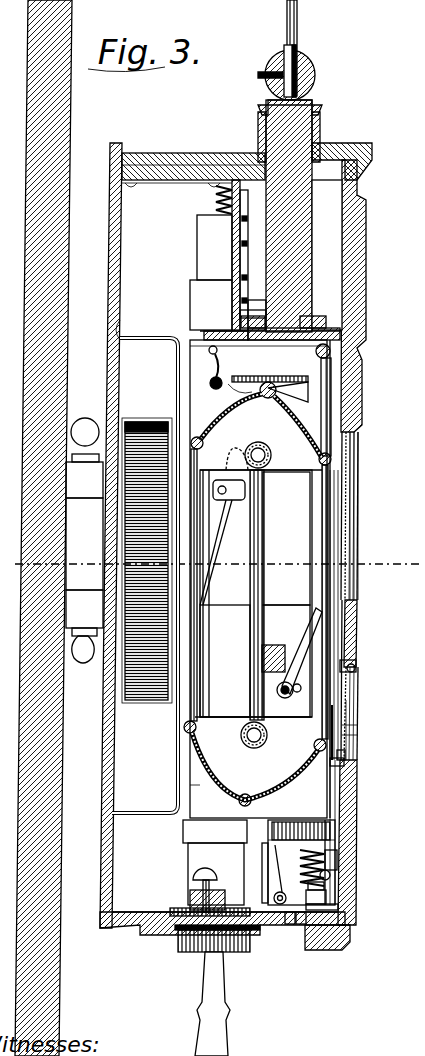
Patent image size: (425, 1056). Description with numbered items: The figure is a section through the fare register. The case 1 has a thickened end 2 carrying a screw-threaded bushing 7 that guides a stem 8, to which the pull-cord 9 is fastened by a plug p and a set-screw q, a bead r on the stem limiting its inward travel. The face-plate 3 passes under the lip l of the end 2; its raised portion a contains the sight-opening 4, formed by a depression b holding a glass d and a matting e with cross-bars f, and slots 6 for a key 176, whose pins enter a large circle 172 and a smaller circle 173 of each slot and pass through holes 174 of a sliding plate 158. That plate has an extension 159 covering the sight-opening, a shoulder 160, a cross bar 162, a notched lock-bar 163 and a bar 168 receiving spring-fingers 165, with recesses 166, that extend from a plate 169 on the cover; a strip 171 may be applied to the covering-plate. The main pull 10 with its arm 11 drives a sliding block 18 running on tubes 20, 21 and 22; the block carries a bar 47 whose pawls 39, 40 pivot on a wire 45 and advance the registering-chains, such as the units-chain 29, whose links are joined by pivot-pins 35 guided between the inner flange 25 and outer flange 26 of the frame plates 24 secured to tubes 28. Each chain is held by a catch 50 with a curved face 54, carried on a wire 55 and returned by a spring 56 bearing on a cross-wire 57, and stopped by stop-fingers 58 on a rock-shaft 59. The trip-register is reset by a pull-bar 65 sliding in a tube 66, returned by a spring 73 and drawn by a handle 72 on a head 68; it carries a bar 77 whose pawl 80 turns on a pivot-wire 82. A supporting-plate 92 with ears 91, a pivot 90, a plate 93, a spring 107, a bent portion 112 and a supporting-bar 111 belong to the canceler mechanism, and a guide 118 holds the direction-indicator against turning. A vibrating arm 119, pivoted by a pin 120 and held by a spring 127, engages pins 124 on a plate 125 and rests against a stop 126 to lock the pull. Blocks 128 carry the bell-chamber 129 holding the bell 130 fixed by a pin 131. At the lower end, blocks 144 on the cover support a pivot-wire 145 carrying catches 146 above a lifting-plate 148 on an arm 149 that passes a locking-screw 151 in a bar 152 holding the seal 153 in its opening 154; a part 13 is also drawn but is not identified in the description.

The case 1 is at (167, 153).
The end of case 2 is at (358, 144).
The face-plate 3 is at (364, 300).
The sight-opening 4 is at (353, 486).
The slots 6 is at (353, 727).
The bushing 7 is at (322, 133).
The stem 8 is at (289, 216).
The pull-cord 9 is at (296, 20).
The main pull 10 is at (330, 315).
The arm 11 is at (327, 255).
The contact block 13 is at (338, 856).
The sliding block 18 is at (286, 661).
The tube 20 is at (331, 372).
The tube 21 is at (244, 593).
The tube 22 is at (200, 678).
The plates 24 is at (260, 579).
The inner flange 25 is at (312, 511).
The outer flange 26 is at (190, 787).
The tube 28 is at (248, 595).
The units-chain 29 is at (300, 427).
The pivot-pin 35 is at (323, 355).
The pawl 39 is at (318, 641).
The pawl 40 is at (280, 681).
The wire or pivot 45 is at (285, 700).
The bar 47 is at (285, 648).
The catch 50 is at (270, 382).
The curved face 54 is at (255, 386).
The wire 55 is at (206, 381).
The spring 56 is at (236, 376).
The cross-wire 57 is at (205, 362).
The stop-finger 58 is at (326, 394).
The rock-shaft 59 is at (331, 353).
The pull-bar 65 is at (216, 560).
The shell or tube 66 is at (215, 561).
The head 68 is at (240, 952).
The handle 72 is at (215, 1036).
The spring 73 is at (215, 205).
The bar 77 is at (226, 506).
The pawl 80 is at (213, 560).
The pivot-wire 82 is at (230, 491).
The pivot 90 is at (290, 926).
The ears 91 is at (274, 899).
The supporting-plate 92 is at (268, 862).
The plate 93 is at (339, 907).
The spring 107 is at (283, 838).
The supporting-bar 111 is at (352, 826).
The bent portion 112 is at (338, 950).
The guide 118 is at (84, 458).
The vibrating arm 119 is at (240, 312).
The pin or pivot 120 is at (240, 323).
The locking-pins 124 is at (245, 216).
The plate 125 is at (170, 185).
The stop 126 is at (190, 344).
The spring 127 is at (248, 300).
The blocks 128 is at (182, 440).
The bell-chamber 129 is at (168, 768).
The bell 130 is at (146, 561).
The screw or pin 131 is at (166, 556).
The ears or blocks 144 is at (327, 903).
The pivot-wire 145 is at (325, 886).
The pawls or catches 146 is at (322, 951).
The lifting-plate 148 is at (347, 920).
The arm 149 is at (299, 950).
The locking-screw 151 is at (200, 884).
The bar 152 is at (193, 880).
The seal 153 is at (175, 935).
The opening 154 is at (195, 937).
The plate 158 is at (353, 737).
The covering-plate 159 is at (343, 606).
The shoulder 160 is at (357, 664).
The plate or bar 162 is at (333, 715).
The lock-bar 163 is at (342, 755).
The spring-finger 165 is at (353, 716).
The recess 166 is at (312, 870).
The bar 168 is at (327, 842).
The plate 169 is at (331, 873).
The strip 171 is at (346, 584).
The circle 172 is at (356, 669).
The smaller circle 173 is at (357, 780).
The holes 174 is at (349, 766).
The key 176 is at (349, 617).
The raised portion a is at (368, 629).
The depression b is at (356, 463).
The glass d is at (354, 526).
The matting e is at (357, 446).
The cross-bars f is at (350, 508).
The lip l is at (364, 172).
The plug p is at (284, 54).
The set-screw q is at (262, 75).
The bead r is at (281, 106).